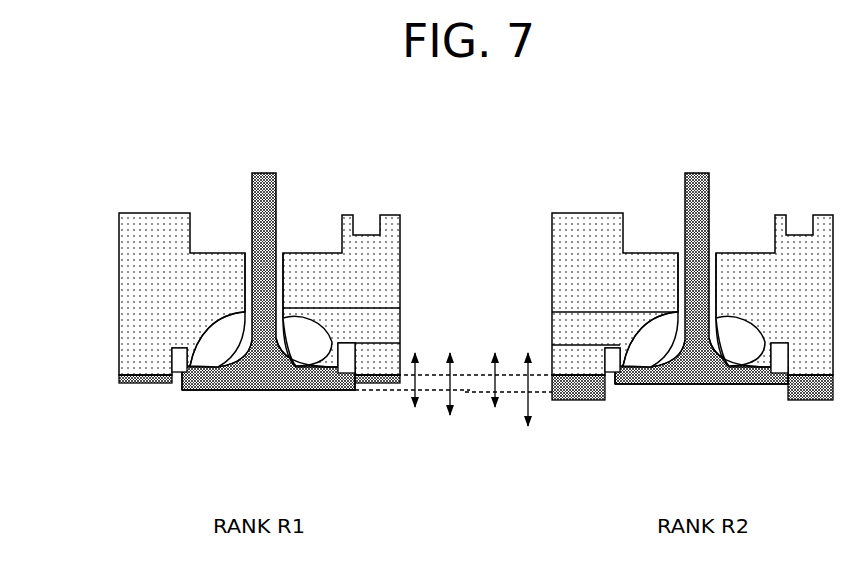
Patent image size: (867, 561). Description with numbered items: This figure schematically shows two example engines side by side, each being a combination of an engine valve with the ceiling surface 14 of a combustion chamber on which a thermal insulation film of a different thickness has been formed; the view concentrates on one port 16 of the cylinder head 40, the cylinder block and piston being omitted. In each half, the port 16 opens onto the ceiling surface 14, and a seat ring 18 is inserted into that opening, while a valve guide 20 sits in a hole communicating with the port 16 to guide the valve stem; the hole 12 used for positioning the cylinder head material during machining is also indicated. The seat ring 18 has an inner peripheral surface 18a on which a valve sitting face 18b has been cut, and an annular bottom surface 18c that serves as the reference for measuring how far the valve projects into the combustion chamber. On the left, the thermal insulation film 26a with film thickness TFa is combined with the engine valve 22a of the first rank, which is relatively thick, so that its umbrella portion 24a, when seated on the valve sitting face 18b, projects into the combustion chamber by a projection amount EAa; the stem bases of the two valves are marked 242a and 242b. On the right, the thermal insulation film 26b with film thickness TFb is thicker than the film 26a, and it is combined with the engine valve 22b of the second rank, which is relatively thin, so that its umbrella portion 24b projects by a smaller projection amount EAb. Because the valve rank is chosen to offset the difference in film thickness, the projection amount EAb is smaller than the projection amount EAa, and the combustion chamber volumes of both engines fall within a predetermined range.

The hole 12 is at (366, 233).
The ceiling surface 14 is at (135, 385).
The port 16 is at (402, 308).
The seat ring 18 is at (402, 344).
The inner peripheral surface 18a is at (198, 392).
The valve sitting face 18b is at (194, 393).
The annular bottom surface 18c is at (180, 374).
The valve guide 20 is at (285, 252).
The engine valve 22a is at (257, 171).
The engine valve 22b is at (691, 171).
The umbrella portion 24a is at (231, 350).
The umbrella portion 24b is at (667, 350).
The thermal insulation film 26a is at (158, 384).
The thermal insulation film 26b is at (580, 402).
The cylinder head 40 is at (479, 256).
The base portion of rank R1 242a is at (275, 392).
The base portion of rank R2 242b is at (668, 386).
The projection amount EAa is at (526, 423).
The projection amount EAb is at (491, 368).
The film thickness TFa is at (408, 392).
The film thickness TFb is at (518, 394).